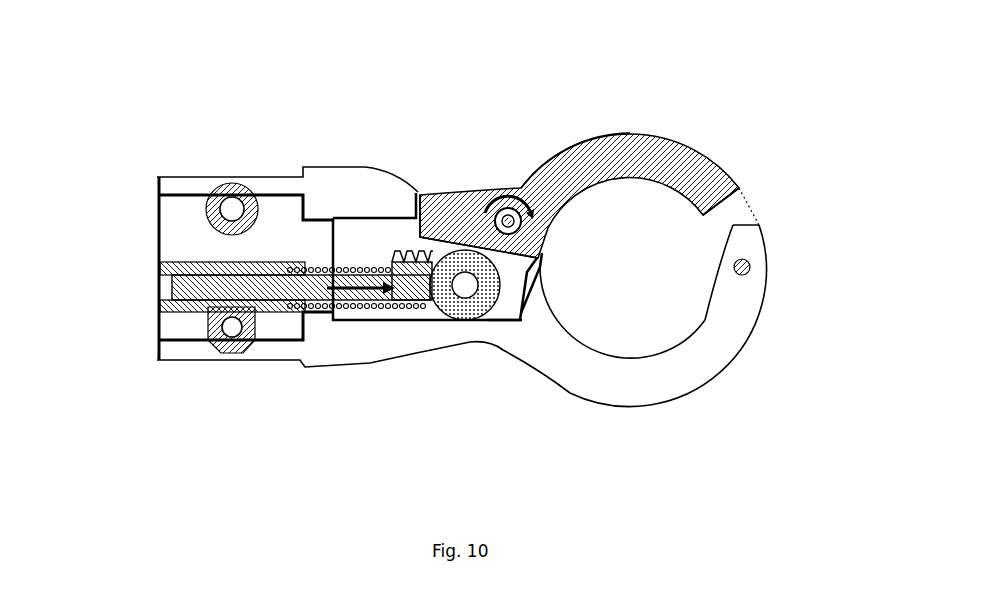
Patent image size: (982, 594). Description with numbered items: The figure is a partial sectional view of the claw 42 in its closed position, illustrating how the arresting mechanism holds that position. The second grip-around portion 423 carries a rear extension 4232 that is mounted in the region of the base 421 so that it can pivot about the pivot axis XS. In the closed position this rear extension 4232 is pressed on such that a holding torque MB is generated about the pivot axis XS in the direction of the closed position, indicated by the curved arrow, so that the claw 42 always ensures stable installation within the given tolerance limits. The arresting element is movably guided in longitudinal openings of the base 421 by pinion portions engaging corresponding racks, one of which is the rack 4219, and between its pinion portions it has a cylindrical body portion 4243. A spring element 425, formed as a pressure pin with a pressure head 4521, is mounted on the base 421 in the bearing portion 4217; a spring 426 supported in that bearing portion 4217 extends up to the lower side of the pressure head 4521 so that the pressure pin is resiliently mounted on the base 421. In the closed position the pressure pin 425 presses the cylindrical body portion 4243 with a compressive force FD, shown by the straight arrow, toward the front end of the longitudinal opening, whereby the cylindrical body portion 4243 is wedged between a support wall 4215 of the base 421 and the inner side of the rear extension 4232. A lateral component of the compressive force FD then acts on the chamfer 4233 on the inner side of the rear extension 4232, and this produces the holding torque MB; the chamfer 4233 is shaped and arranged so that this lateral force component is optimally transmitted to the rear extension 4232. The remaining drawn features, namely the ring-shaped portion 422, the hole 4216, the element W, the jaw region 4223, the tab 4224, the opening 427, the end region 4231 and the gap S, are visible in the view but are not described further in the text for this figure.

The claw 42 is at (126, 114).
The base 421 is at (244, 388).
The clamping ring 422 is at (717, 377).
The second grip-around portion 423 is at (628, 133).
The support wall 4215 is at (390, 322).
The mounting hole 4216 is at (231, 200).
The bearing portion 4217 is at (160, 303).
The rack 4219 is at (403, 250).
The spring element 425 is at (297, 300).
The spring 426 is at (367, 262).
The pressure head 4521 is at (425, 302).
The gear wheel W is at (466, 300).
The cylindrical body portion 4243 is at (483, 322).
The jaw end 4223 is at (533, 290).
The tab 4224 is at (737, 230).
The pin hole 427 is at (744, 275).
The hook end 4231 is at (727, 177).
The rear extension 4232 is at (466, 215).
The chamfer 4233 is at (447, 193).
The holding torque MB is at (510, 206).
The pivot axis XS is at (550, 228).
The gap S is at (759, 223).
The compressive force FD is at (347, 300).